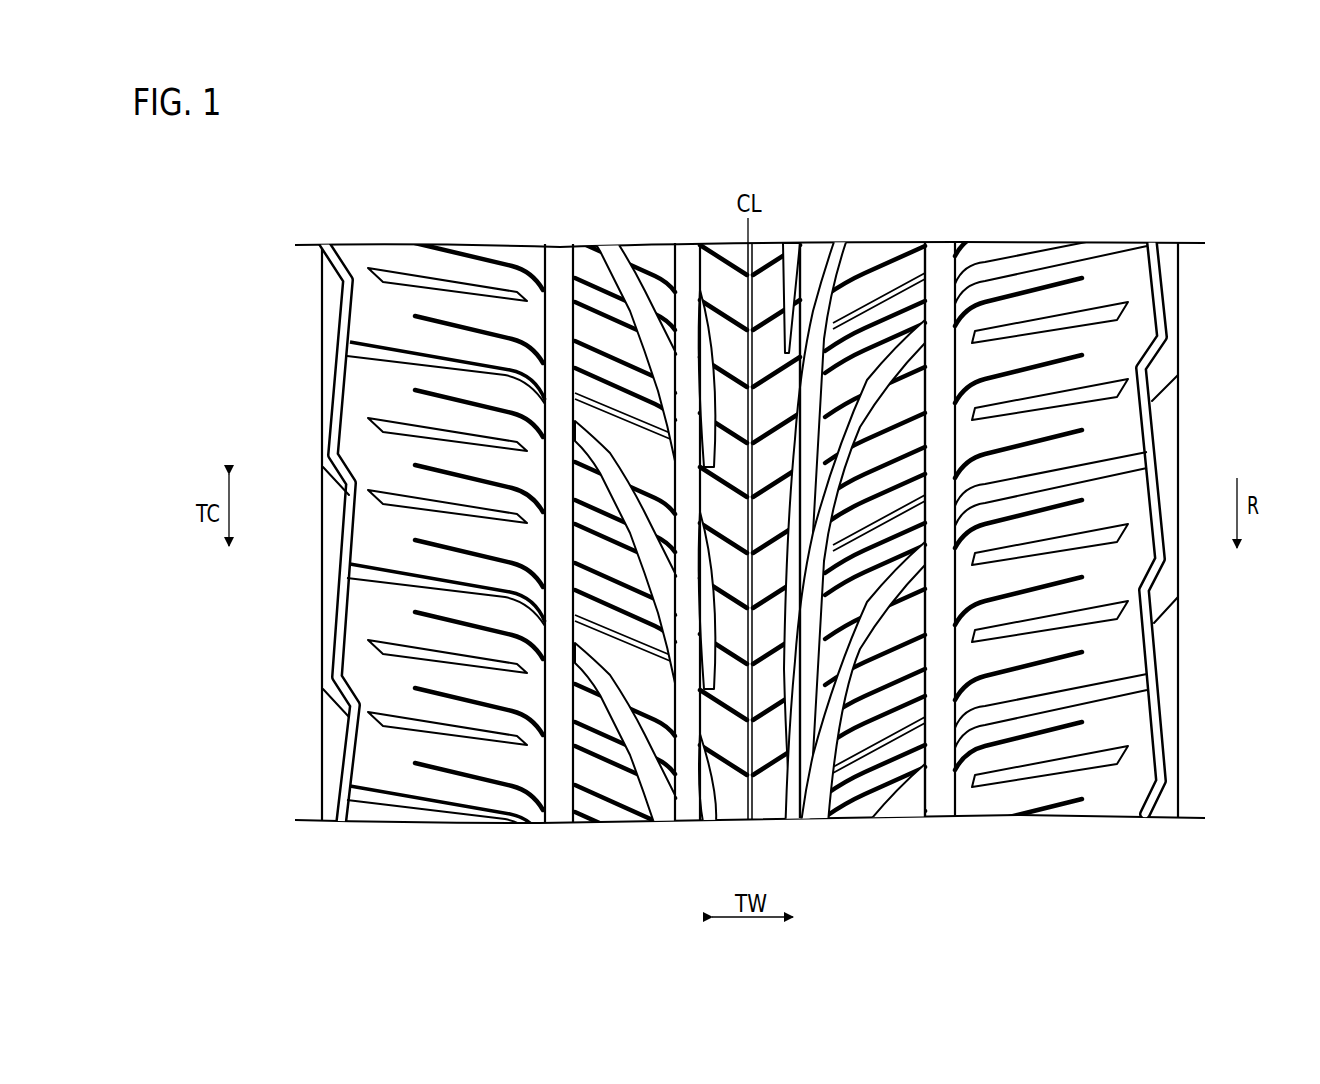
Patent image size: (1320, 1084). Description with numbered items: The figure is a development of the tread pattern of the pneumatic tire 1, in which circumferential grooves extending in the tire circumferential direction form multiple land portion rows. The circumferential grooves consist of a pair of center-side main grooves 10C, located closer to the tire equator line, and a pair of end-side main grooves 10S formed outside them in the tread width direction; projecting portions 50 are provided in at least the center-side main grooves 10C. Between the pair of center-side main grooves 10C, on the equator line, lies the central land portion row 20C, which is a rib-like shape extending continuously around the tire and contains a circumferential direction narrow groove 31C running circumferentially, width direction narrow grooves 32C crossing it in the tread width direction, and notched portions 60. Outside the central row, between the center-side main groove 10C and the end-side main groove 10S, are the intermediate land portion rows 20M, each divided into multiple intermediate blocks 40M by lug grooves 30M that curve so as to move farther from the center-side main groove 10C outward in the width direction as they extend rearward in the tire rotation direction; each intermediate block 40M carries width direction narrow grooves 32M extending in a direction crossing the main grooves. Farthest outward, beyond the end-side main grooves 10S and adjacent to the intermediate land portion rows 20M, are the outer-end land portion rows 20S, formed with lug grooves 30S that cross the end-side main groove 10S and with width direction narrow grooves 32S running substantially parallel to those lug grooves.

The pneumatic tire 1 is at (944, 103).
The end-side main grooves 10S is at (560, 262).
The center-side main grooves 10C is at (687, 262).
The outer-end land portion rows 20S is at (545, 143).
The intermediate land portion rows 20M is at (673, 143).
The central land portion row 20C is at (800, 143).
The lug grooves 30S is at (385, 352).
The width direction narrow grooves 32S is at (420, 543).
The lug grooves 30M is at (610, 262).
The width direction narrow grooves 32M is at (585, 805).
The circumferential direction narrow groove 31C is at (770, 250).
The width direction narrow grooves 32C is at (745, 805).
The intermediate blocks 40M is at (940, 700).
The projecting portions 50 is at (843, 260).
The notched portions 60 is at (795, 262).